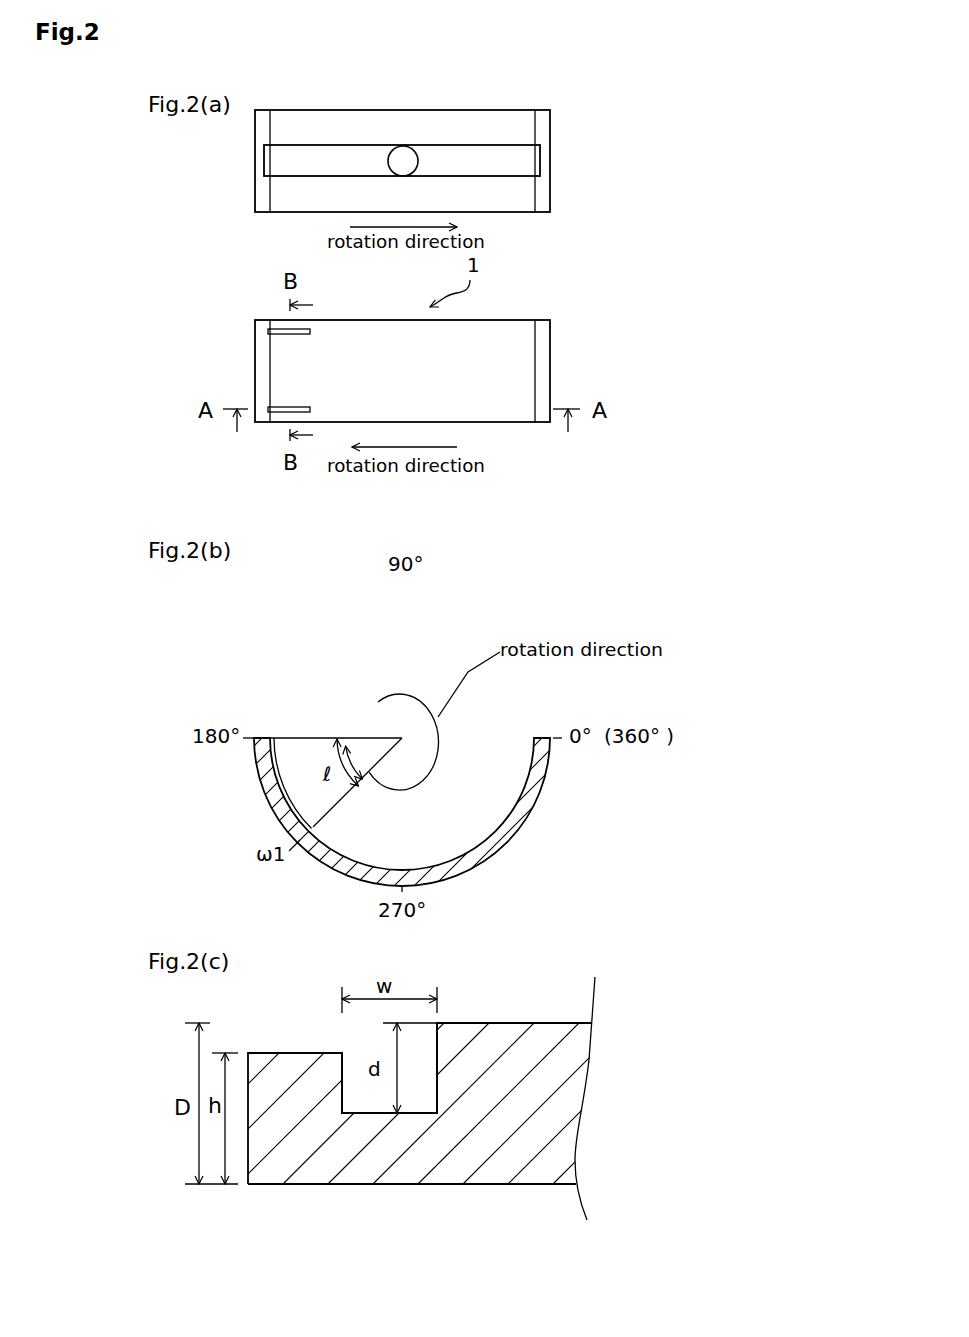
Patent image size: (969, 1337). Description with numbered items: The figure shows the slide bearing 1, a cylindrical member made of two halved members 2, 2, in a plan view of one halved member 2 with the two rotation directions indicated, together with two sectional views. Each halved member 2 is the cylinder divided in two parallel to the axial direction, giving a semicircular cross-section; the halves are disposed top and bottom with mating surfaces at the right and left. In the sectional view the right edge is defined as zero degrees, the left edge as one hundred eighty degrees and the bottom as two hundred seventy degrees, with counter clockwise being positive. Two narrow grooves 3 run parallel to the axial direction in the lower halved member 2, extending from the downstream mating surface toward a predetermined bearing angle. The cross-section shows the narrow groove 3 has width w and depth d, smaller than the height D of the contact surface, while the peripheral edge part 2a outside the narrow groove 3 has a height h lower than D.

In FIG. 2A, the slide bearing 1 is at (400, 98).
In FIG. 2A, the halved member 2 is at (545, 148).
In FIG. 2B, the halved member 2 is at (543, 775).
In FIG. 2C, the halved member 2 is at (505, 1043).
In FIG. 2C, the peripheral edge part 2a is at (311, 1053).
In FIG. 2A, the narrow groove 3 is at (283, 330).
In FIG. 2B, the narrow groove 3 is at (270, 803).
In FIG. 2C, the narrow groove 3 is at (343, 1070).